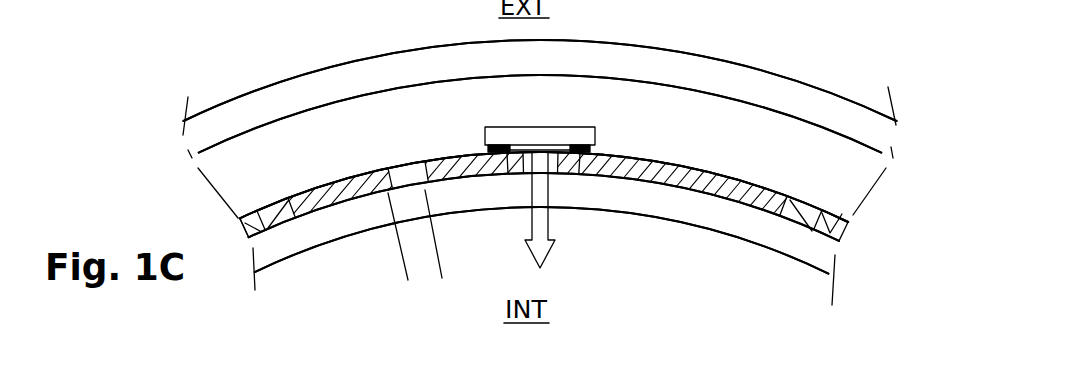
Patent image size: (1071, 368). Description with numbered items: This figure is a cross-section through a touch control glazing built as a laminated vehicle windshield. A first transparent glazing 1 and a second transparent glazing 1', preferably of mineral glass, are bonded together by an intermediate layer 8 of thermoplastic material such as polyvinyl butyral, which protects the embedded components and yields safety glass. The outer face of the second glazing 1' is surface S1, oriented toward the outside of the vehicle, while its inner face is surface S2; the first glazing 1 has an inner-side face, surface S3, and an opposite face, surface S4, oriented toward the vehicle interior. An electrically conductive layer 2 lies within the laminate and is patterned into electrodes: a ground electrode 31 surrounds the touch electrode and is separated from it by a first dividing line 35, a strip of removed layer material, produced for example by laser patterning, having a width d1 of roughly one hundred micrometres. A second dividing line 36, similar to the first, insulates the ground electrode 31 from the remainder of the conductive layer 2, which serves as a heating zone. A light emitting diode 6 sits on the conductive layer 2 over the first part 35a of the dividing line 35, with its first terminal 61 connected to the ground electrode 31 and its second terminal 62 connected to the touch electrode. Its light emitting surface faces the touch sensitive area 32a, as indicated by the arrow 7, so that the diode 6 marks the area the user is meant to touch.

The first transparent glazing 1 is at (514, 266).
The second transparent glazing 1' is at (509, 99).
The electrically conductive layer 2 is at (252, 228).
The light emitting diode 6 is at (518, 133).
The arrow 7 is at (550, 220).
The intermediate layer 8 is at (214, 170).
The ground electrode 31 is at (637, 168).
The touch sensitive area 32a is at (453, 163).
The first dividing line 35 is at (384, 182).
The first part of the dividing line 35a is at (540, 155).
The second dividing line 36 is at (279, 214).
The first terminal 61 is at (571, 152).
The second terminal 62 is at (503, 152).
The width of the first dividing line d1 is at (378, 282).
The surface S1 is at (797, 74).
The surface S2 is at (852, 147).
The surface S3 is at (790, 189).
The surface S4 is at (777, 255).